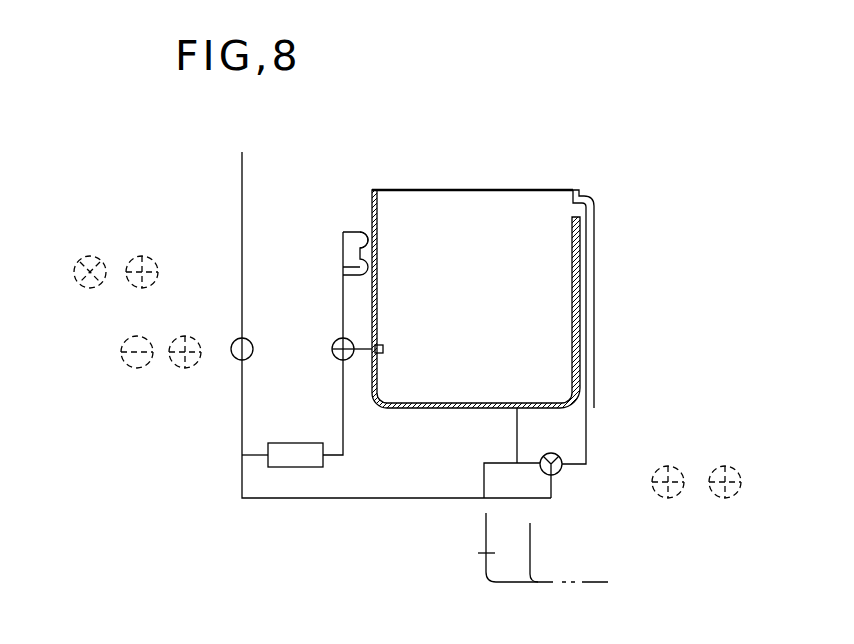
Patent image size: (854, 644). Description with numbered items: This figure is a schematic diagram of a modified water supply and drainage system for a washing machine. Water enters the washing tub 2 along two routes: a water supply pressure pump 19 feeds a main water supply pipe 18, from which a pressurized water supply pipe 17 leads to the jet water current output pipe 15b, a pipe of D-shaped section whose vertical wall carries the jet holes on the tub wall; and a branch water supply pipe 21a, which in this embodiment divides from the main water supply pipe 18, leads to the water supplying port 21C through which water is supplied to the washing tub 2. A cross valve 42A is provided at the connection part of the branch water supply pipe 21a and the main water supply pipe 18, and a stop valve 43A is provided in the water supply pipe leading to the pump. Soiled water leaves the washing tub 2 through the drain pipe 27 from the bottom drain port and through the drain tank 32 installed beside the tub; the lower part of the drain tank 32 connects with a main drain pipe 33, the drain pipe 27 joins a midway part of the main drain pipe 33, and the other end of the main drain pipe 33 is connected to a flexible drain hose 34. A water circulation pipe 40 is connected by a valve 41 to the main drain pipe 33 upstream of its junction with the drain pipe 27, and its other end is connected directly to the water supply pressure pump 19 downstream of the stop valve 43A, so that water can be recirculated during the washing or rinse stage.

The washing tub 2 is at (417, 408).
The jet water current output pipe 15b is at (368, 230).
The pressurized water supply pipe 17 is at (352, 233).
The main water supply pipe 18 is at (342, 430).
The water supply pressure pump 19 is at (300, 450).
The branch water supply pipe 21a is at (358, 347).
The water supplying port 21C is at (384, 349).
The drain pipe 27 is at (517, 428).
The drain tank 32 is at (596, 298).
The main drain pipe 33 is at (484, 480).
The flexible drain hose 34 is at (484, 572).
The water circulation pipe 40 is at (367, 499).
The valve 41 is at (561, 472).
The cross valve 42A is at (332, 346).
The stop valve 43A is at (233, 356).